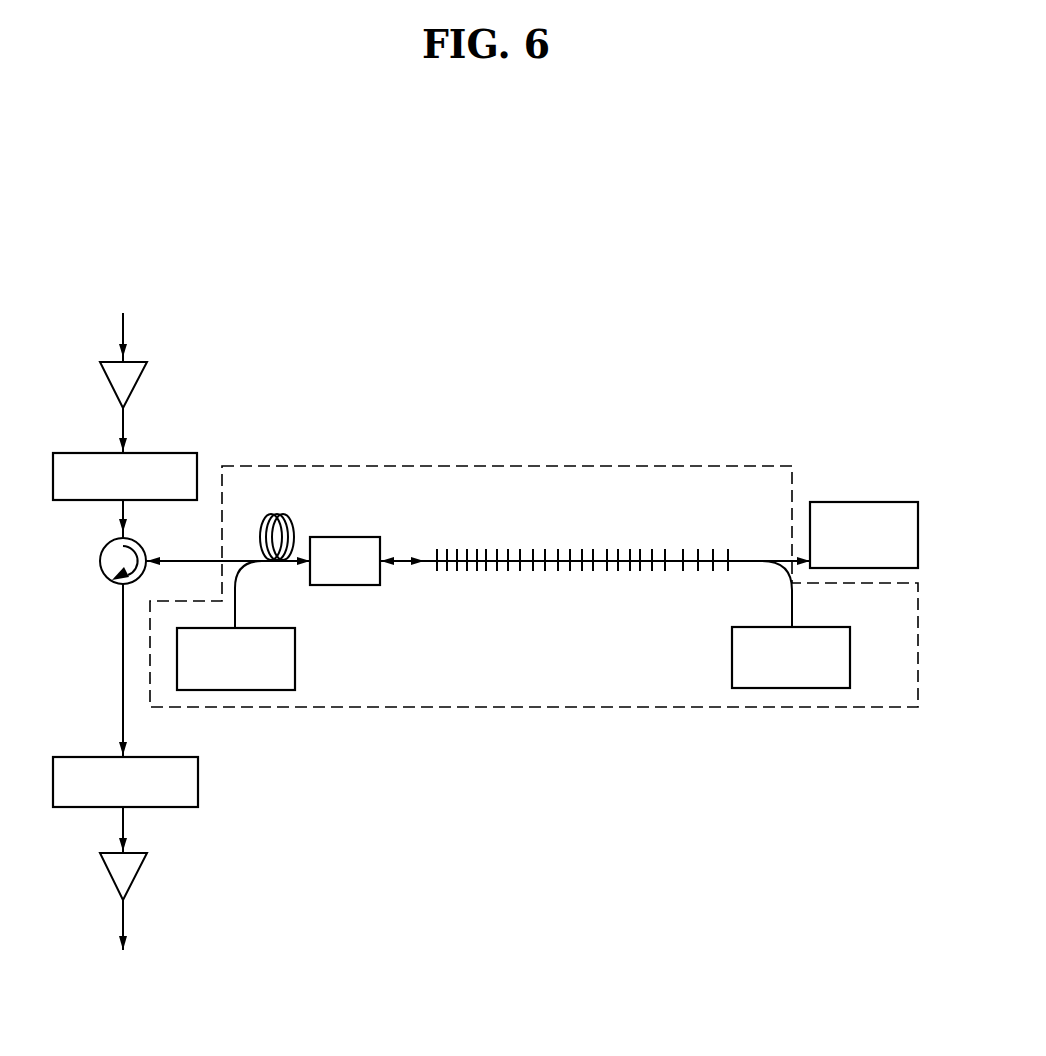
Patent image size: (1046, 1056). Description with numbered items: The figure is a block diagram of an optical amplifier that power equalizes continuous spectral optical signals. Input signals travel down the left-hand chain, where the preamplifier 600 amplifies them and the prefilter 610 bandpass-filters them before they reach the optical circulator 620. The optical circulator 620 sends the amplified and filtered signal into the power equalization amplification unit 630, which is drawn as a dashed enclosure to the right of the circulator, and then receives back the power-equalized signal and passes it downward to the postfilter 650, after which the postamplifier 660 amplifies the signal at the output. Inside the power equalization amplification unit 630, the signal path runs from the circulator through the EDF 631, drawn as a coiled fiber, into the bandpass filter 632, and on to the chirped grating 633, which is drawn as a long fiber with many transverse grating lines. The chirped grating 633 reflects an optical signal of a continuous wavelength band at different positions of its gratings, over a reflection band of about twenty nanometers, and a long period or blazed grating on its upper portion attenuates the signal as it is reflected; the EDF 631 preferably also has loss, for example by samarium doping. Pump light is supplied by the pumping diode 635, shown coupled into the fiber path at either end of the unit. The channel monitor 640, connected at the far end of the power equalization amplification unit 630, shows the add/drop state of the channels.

The preamplifier 600 is at (140, 387).
The prefilter 610 is at (150, 453).
The optical circulator 620 is at (143, 548).
The power equalization amplification unit 630 is at (543, 466).
The EDF 631 is at (282, 517).
The bandpass filter 632 is at (345, 537).
The chirped grating 633 is at (437, 549).
The second pumping diode 635 is at (263, 628).
The channel monitor 640 is at (863, 502).
The postfilter 650 is at (150, 757).
The postamplifier 660 is at (143, 877).